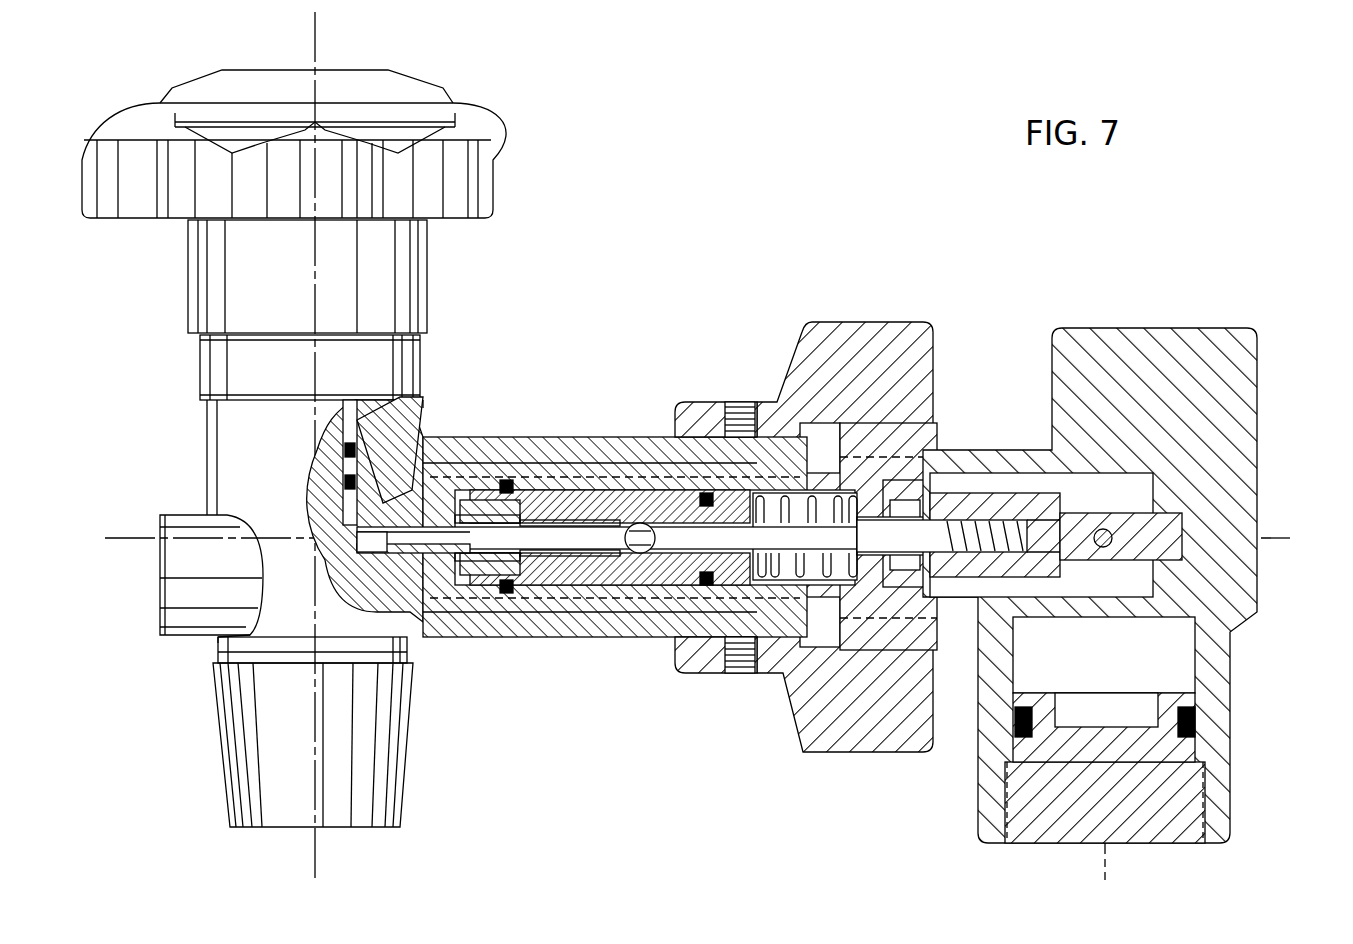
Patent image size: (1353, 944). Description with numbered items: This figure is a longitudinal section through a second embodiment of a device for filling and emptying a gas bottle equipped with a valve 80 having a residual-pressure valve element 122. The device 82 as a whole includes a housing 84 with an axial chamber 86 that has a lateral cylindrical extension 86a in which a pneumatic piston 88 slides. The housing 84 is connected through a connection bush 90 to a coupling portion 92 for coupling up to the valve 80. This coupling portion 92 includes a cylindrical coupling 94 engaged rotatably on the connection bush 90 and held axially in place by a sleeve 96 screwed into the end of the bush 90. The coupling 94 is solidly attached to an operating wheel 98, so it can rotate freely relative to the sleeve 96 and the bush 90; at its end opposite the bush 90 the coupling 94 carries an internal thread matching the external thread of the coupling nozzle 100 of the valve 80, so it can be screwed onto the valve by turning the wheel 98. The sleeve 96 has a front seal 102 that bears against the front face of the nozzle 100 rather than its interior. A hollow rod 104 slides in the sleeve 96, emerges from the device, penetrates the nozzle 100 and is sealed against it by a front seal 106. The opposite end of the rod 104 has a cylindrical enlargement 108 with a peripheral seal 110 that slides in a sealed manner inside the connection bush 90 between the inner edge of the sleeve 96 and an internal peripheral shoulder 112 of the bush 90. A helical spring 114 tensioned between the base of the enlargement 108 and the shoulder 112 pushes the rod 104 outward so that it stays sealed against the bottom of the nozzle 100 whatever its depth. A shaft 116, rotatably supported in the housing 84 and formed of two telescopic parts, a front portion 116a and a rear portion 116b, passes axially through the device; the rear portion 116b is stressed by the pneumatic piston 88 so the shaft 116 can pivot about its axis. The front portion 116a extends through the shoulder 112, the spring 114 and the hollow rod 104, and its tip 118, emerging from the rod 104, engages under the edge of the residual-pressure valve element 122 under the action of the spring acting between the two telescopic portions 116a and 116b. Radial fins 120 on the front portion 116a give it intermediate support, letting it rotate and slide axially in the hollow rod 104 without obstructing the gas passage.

The valve 80 is at (472, 296).
The device 82 is at (904, 277).
The housing 84 is at (1128, 328).
The axial chamber 86 is at (1136, 508).
The lateral cylindrical extension 86a is at (1166, 670).
The pneumatic piston 88 is at (1200, 700).
The connection bush 90 is at (885, 530).
The coupling portion 92 is at (530, 683).
The cylindrical coupling 94 is at (570, 445).
The sleeve 96 is at (603, 478).
The operating wheel 98 is at (797, 334).
The coupling nozzle 100 is at (430, 487).
The front seal 102 is at (514, 488).
The hollow rod 104 is at (650, 580).
The front seal 106 is at (392, 535).
The cylindrical enlargement 108 is at (668, 492).
The peripheral seal 110 is at (712, 490).
The internal peripheral shoulder 112 is at (1022, 626).
The helical spring 114 is at (787, 655).
The shaft 116 is at (860, 470).
The front portion 116a is at (540, 580).
The rear portion 116b is at (1010, 500).
The tip 118 is at (484, 525).
The radial fins 120 is at (633, 552).
The residual-pressure valve element 122 is at (315, 470).